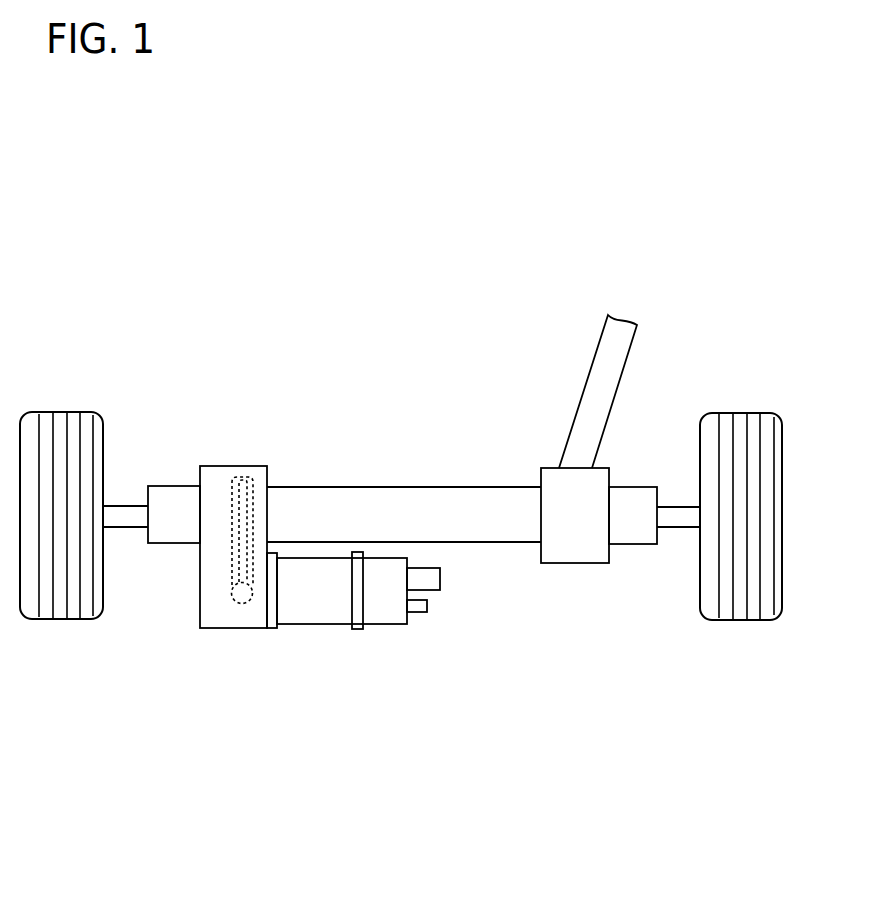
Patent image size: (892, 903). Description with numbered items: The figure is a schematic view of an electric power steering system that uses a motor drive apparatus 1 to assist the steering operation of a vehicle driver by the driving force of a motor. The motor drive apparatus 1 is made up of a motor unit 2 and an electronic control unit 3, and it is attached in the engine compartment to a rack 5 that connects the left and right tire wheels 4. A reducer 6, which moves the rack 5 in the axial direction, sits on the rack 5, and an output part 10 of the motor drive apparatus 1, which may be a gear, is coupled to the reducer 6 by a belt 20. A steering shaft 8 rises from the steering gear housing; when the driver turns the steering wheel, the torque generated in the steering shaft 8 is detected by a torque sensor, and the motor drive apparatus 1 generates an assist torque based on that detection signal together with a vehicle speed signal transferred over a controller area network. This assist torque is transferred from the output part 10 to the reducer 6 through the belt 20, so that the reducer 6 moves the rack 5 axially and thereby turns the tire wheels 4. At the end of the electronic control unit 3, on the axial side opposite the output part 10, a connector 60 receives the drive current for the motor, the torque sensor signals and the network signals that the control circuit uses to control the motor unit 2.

The motor drive apparatus 1 is at (217, 722).
The motor unit 2 is at (307, 613).
The electronic control unit 3 is at (375, 613).
The tire wheels 4 is at (60, 428).
The rack 5 is at (356, 497).
The reducer 6 is at (233, 498).
The steering shaft 8 is at (599, 350).
The output part 10 is at (232, 594).
The belt 20 is at (243, 563).
The connector 60 is at (430, 592).